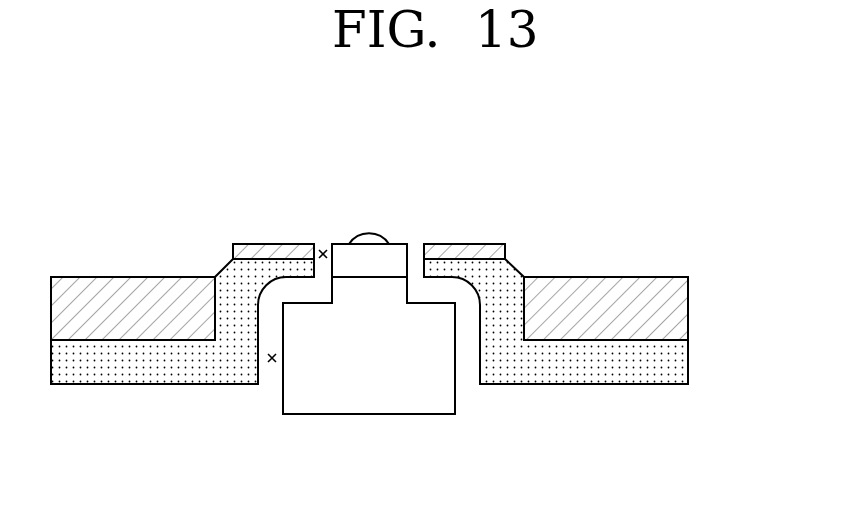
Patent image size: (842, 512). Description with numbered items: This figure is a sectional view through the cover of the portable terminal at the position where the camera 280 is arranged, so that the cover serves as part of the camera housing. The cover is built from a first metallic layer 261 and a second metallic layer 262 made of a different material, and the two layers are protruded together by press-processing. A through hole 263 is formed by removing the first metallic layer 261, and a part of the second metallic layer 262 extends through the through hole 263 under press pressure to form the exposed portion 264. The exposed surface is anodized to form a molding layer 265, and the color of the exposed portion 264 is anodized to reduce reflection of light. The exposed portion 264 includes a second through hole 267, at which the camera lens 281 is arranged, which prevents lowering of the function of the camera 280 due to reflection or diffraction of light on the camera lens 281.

The first metallic layer 261 is at (683, 305).
The second metallic layer 262 is at (683, 361).
The through hole 263 is at (272, 362).
The exposed portion 264 is at (449, 265).
The molding layer 265 is at (275, 251).
The second through hole 267 is at (322, 250).
The camera 280 is at (368, 400).
The camera lens 281 is at (367, 236).